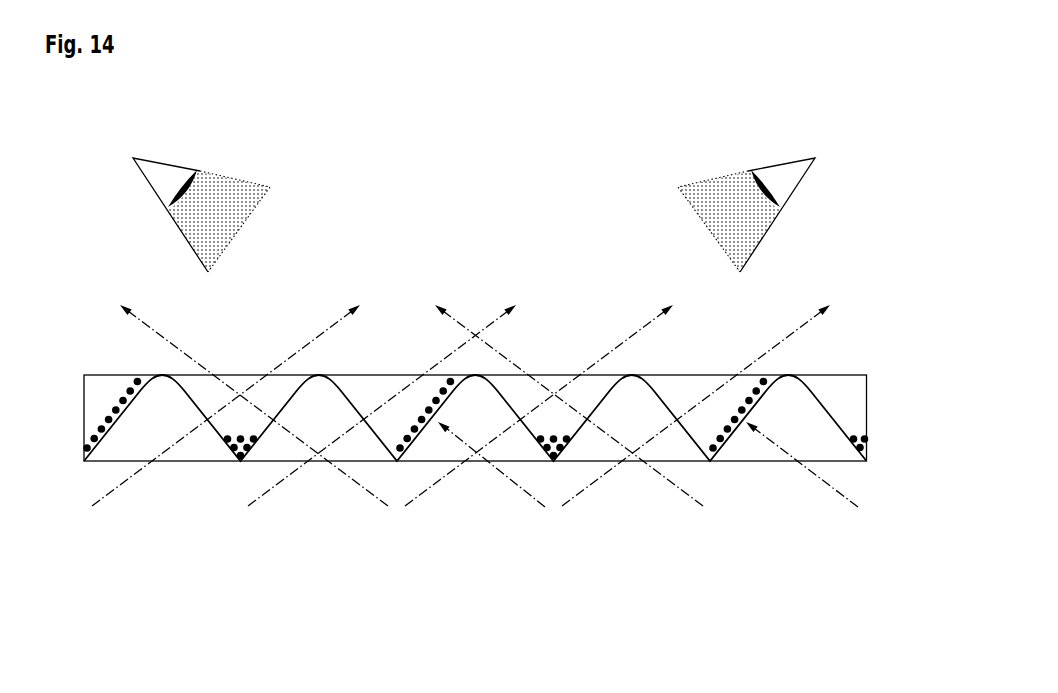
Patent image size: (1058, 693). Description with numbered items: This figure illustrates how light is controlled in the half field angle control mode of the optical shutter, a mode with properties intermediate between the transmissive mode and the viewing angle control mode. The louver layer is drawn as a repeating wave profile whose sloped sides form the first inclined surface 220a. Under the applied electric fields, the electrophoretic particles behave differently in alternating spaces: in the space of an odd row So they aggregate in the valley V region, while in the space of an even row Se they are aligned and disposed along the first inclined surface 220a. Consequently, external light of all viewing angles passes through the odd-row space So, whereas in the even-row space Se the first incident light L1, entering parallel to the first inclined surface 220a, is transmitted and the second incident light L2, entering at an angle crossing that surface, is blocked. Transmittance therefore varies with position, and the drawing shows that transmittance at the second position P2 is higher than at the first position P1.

The first position P1 is at (163, 162).
The second position P2 is at (785, 160).
The space of an odd row So is at (242, 420).
The space of an even row Se is at (397, 420).
The first inclined surface 220a is at (758, 395).
The first incident light L1 is at (122, 483).
The second incident light L2 is at (832, 485).
The valley V is at (553, 475).